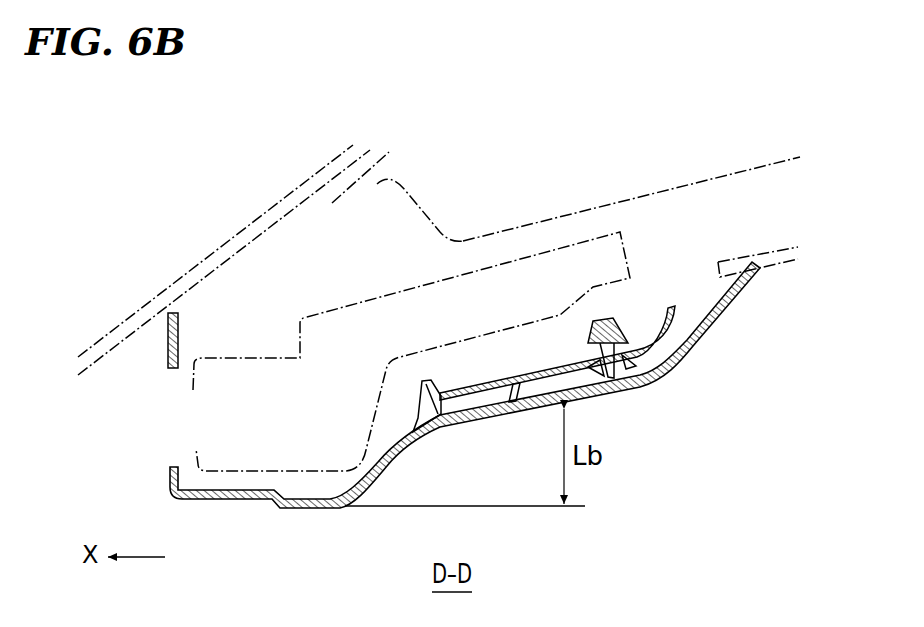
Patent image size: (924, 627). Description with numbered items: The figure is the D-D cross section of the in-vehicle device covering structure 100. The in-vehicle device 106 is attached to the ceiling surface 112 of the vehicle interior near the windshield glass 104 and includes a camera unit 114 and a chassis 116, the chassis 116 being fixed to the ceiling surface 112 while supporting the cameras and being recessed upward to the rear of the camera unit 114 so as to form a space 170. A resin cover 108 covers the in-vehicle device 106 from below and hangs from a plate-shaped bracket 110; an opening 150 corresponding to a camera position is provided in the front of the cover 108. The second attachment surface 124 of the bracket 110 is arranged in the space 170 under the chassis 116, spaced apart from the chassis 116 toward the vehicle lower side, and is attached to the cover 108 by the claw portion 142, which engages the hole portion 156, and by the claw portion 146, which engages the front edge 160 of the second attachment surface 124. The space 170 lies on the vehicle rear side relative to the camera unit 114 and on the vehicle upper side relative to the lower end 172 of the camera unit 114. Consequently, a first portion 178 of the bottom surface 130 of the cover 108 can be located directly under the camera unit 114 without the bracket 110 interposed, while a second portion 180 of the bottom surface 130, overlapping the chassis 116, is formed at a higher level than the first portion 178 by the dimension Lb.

The in-vehicle device covering structure 100 is at (420, 165).
The windshield glass 104 is at (233, 235).
The in-vehicle device 106 is at (384, 284).
The cover 108 is at (690, 363).
The bracket 110 is at (676, 302).
The ceiling surface 112 is at (607, 205).
The camera unit 114 is at (250, 372).
The chassis 116 is at (498, 277).
The second attachment surface 124 is at (537, 371).
The bottom surface 130 is at (317, 506).
The claw portion 142 is at (590, 330).
The claw portion 146 is at (430, 380).
The opening 150 is at (174, 466).
The hole portion 156 is at (628, 342).
The front edge 160 is at (448, 388).
The space 170 is at (513, 343).
The lower end 172 is at (248, 472).
The first portion 178 is at (248, 501).
The second portion 180 is at (500, 424).